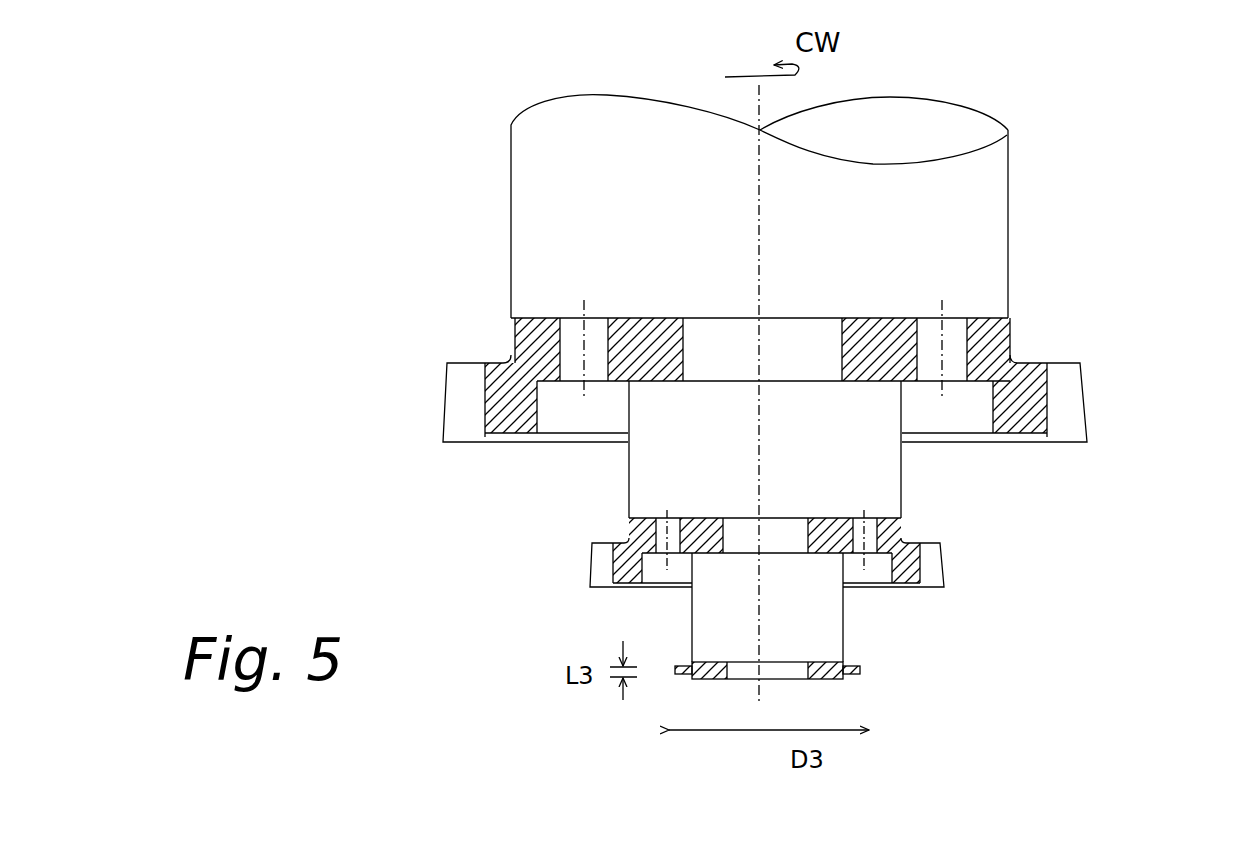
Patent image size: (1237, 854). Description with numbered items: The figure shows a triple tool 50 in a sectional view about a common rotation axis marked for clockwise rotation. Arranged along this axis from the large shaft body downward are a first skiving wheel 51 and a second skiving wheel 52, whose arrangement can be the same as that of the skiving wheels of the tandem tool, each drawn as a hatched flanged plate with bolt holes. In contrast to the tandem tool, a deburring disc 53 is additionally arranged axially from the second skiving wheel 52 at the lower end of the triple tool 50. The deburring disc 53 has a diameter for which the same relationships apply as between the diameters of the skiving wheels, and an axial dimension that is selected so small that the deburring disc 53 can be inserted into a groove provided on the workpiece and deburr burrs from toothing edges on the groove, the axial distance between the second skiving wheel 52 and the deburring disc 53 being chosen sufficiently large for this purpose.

The triple tool 50 is at (1166, 200).
The first skiving wheel 51 is at (1130, 403).
The second skiving wheel 52 is at (990, 573).
The deburring disc 53 is at (898, 670).